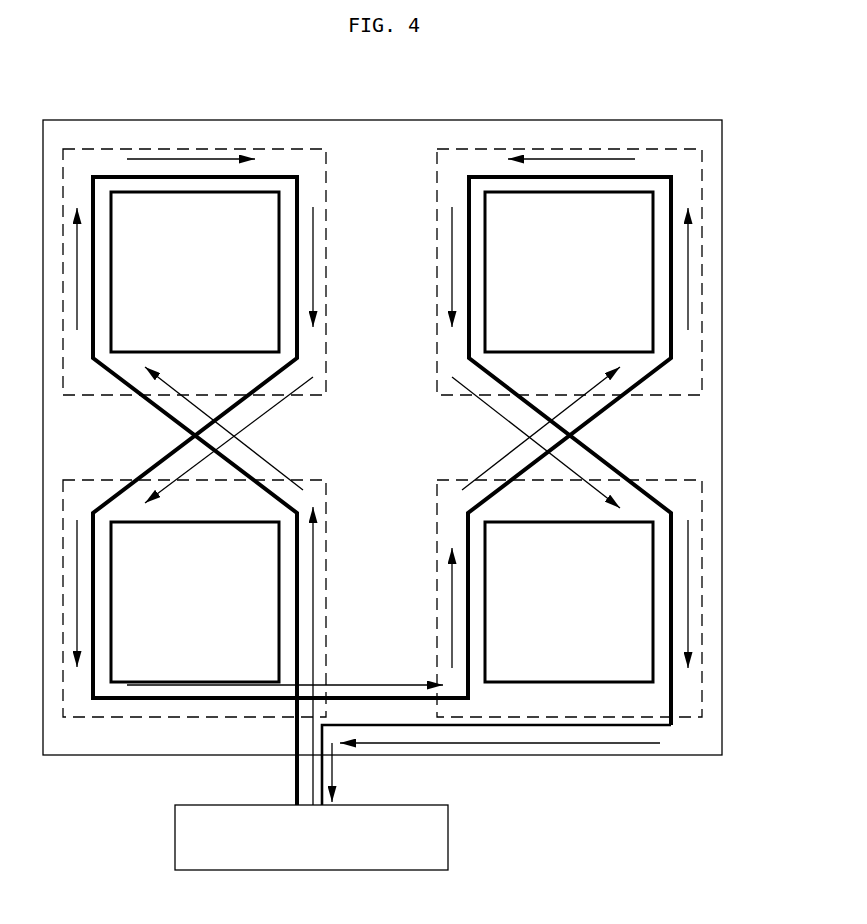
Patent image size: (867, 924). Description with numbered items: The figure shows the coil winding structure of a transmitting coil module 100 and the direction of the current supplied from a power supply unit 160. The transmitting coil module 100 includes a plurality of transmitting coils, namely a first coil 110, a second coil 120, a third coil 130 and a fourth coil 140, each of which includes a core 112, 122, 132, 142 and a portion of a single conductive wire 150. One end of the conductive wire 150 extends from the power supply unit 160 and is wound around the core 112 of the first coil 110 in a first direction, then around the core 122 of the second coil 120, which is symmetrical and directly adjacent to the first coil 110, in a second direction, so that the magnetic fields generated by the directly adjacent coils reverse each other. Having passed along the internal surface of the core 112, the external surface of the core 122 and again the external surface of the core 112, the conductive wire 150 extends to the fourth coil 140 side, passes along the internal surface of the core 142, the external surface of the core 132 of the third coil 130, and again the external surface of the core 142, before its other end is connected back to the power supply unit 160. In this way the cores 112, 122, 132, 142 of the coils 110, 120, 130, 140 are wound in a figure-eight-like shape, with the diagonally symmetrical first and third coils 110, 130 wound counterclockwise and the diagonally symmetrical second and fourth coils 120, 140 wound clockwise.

The transmitting coil module 100 is at (383, 135).
The first coil 110 is at (140, 717).
The core 112 is at (126, 670).
The second coil 120 is at (222, 148).
The core 122 is at (262, 203).
The third coil 130 is at (540, 148).
The core 132 is at (503, 203).
The fourth coil 140 is at (582, 717).
The core 142 is at (597, 672).
The conductive wire 150 is at (662, 727).
The power supply unit 160 is at (448, 838).